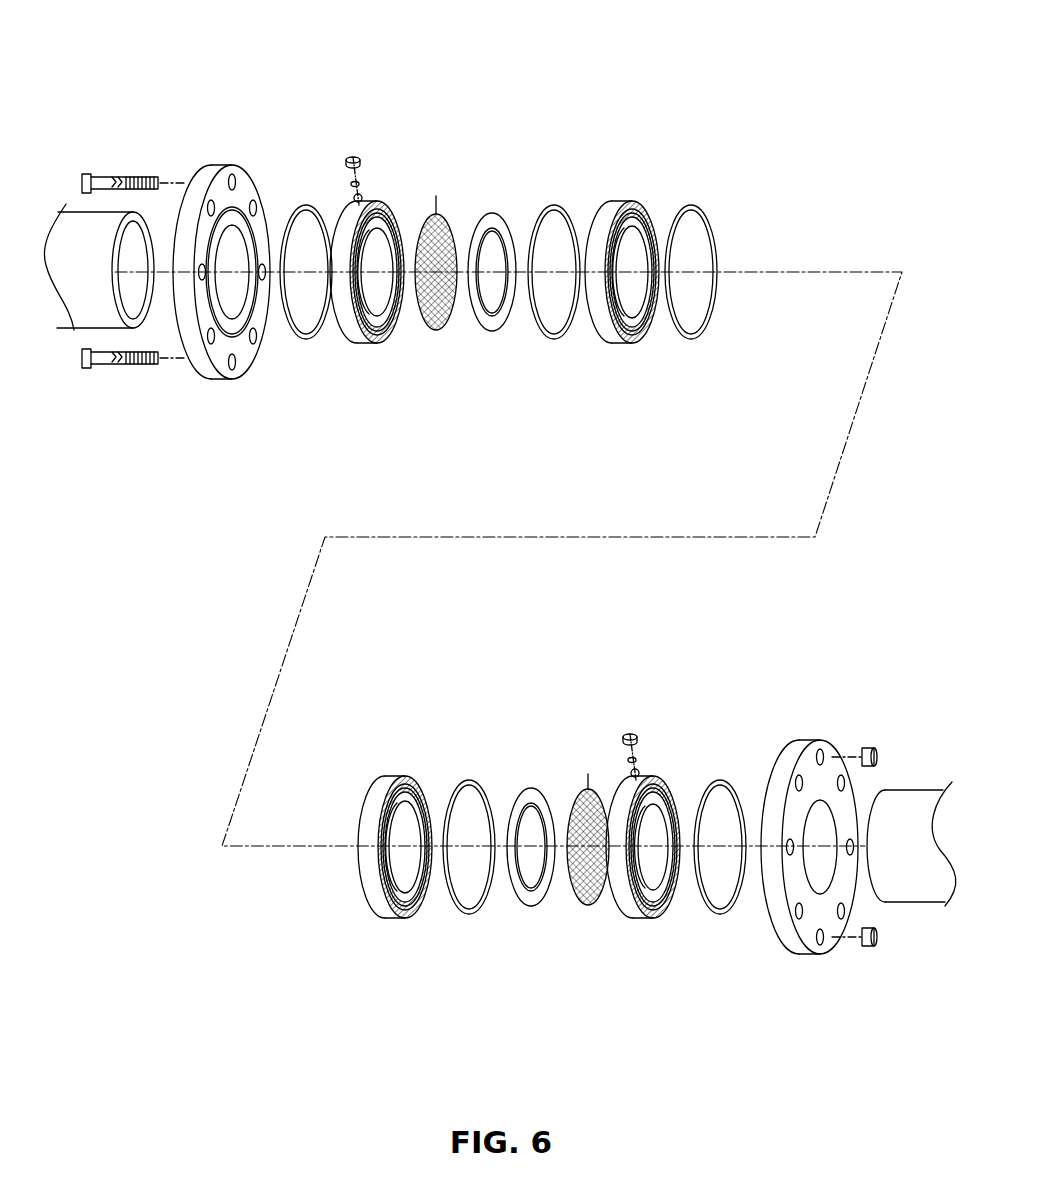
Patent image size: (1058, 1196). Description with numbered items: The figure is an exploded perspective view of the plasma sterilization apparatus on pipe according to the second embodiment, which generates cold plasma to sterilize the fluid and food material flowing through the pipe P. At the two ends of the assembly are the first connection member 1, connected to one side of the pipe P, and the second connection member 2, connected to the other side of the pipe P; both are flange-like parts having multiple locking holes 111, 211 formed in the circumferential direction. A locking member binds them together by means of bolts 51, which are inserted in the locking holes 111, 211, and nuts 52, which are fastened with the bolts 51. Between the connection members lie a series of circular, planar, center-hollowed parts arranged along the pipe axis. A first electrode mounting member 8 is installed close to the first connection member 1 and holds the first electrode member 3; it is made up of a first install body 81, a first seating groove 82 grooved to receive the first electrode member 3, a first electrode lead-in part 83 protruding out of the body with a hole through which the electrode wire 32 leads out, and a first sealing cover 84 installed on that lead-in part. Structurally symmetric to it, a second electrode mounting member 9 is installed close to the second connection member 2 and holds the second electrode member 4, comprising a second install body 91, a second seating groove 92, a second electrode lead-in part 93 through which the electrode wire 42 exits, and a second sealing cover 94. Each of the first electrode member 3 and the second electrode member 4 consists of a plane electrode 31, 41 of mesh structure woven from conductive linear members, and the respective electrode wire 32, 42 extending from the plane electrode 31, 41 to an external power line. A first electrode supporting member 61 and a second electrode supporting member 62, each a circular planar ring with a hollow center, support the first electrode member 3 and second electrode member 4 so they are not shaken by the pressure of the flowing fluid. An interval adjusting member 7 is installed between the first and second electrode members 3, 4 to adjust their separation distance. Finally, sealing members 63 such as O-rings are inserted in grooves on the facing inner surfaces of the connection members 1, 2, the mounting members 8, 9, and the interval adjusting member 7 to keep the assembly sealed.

The first connection member 1 is at (221, 270).
The locking holes 111 is at (210, 344).
The second connection member 2 is at (809, 845).
The locking holes 211 is at (800, 919).
The first electrode member 3 is at (477, 214).
The plane electrode 31 is at (445, 214).
The electrode wire 32 is at (437, 196).
The second electrode member 4 is at (543, 790).
The plane electrode 41 is at (580, 803).
The electrode wire 42 is at (587, 774).
The bolts 51 is at (120, 368).
The nuts 52 is at (866, 950).
The first electrode supporting member 61 is at (489, 333).
The second electrode supporting member 62 is at (531, 907).
The sealing member 63 is at (304, 340).
The interval adjusting member 7 is at (612, 345).
The first electrode mounting member 8 is at (378, 186).
The first install body 81 is at (342, 200).
The first seating groove 82 is at (410, 225).
The first electrode lead-in part 83 is at (383, 232).
The first sealing cover 84 is at (355, 141).
The second electrode mounting member 9 is at (656, 763).
The second install body 91 is at (630, 798).
The second seating groove 92 is at (682, 810).
The second electrode lead-in part 93 is at (664, 812).
The second sealing cover 94 is at (630, 717).
The pipe P is at (75, 326).